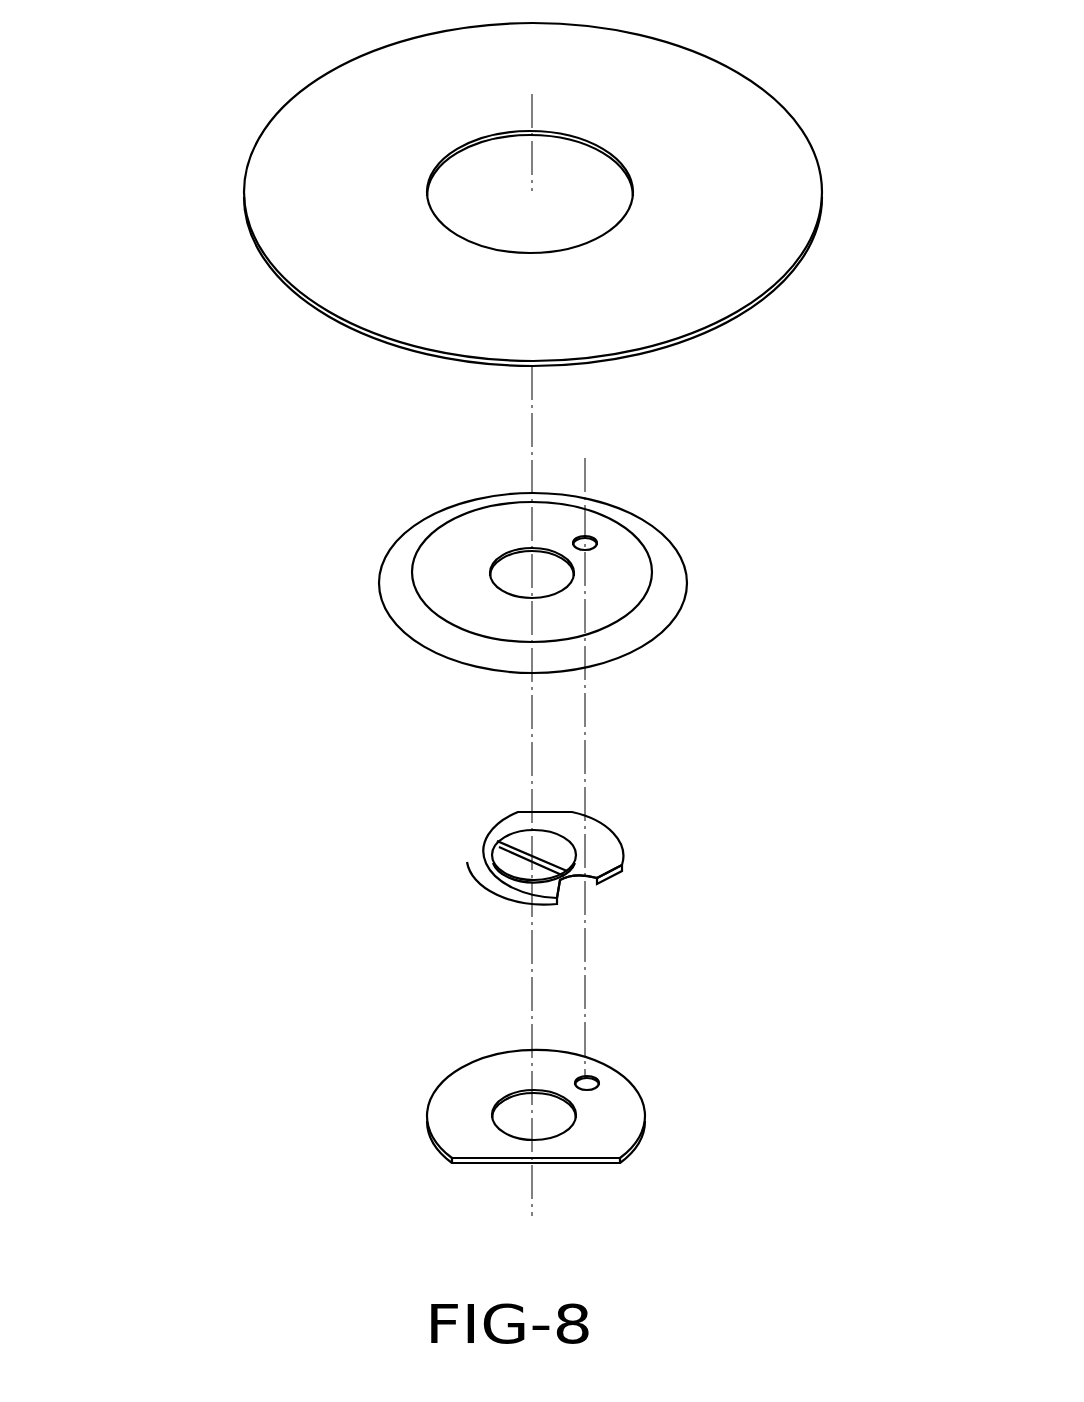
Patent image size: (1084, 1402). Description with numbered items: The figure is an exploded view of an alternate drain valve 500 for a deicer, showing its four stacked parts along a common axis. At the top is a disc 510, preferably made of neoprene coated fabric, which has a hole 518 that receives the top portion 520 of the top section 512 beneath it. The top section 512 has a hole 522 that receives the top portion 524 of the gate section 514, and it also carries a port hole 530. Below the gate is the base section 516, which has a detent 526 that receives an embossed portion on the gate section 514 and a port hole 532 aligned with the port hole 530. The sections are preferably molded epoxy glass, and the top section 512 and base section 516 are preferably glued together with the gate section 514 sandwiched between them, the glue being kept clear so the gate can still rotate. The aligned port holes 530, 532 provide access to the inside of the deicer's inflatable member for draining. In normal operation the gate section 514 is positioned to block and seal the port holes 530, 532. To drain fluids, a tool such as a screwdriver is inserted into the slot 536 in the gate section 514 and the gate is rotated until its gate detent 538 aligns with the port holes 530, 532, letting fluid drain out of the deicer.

The drain valve 500 is at (142, 94).
The disc 510 is at (740, 220).
The hole 518 is at (556, 172).
The top section 512 is at (650, 627).
The top portion 520 is at (633, 582).
The hole 522 is at (519, 568).
The port hole 530 is at (586, 540).
The gate section 514 is at (606, 864).
The top portion 524 is at (548, 841).
The slot 536 is at (512, 843).
The gate detent 538 is at (573, 888).
The base section 516 is at (606, 1145).
The detent 526 is at (470, 1127).
The port hole 532 is at (588, 1082).